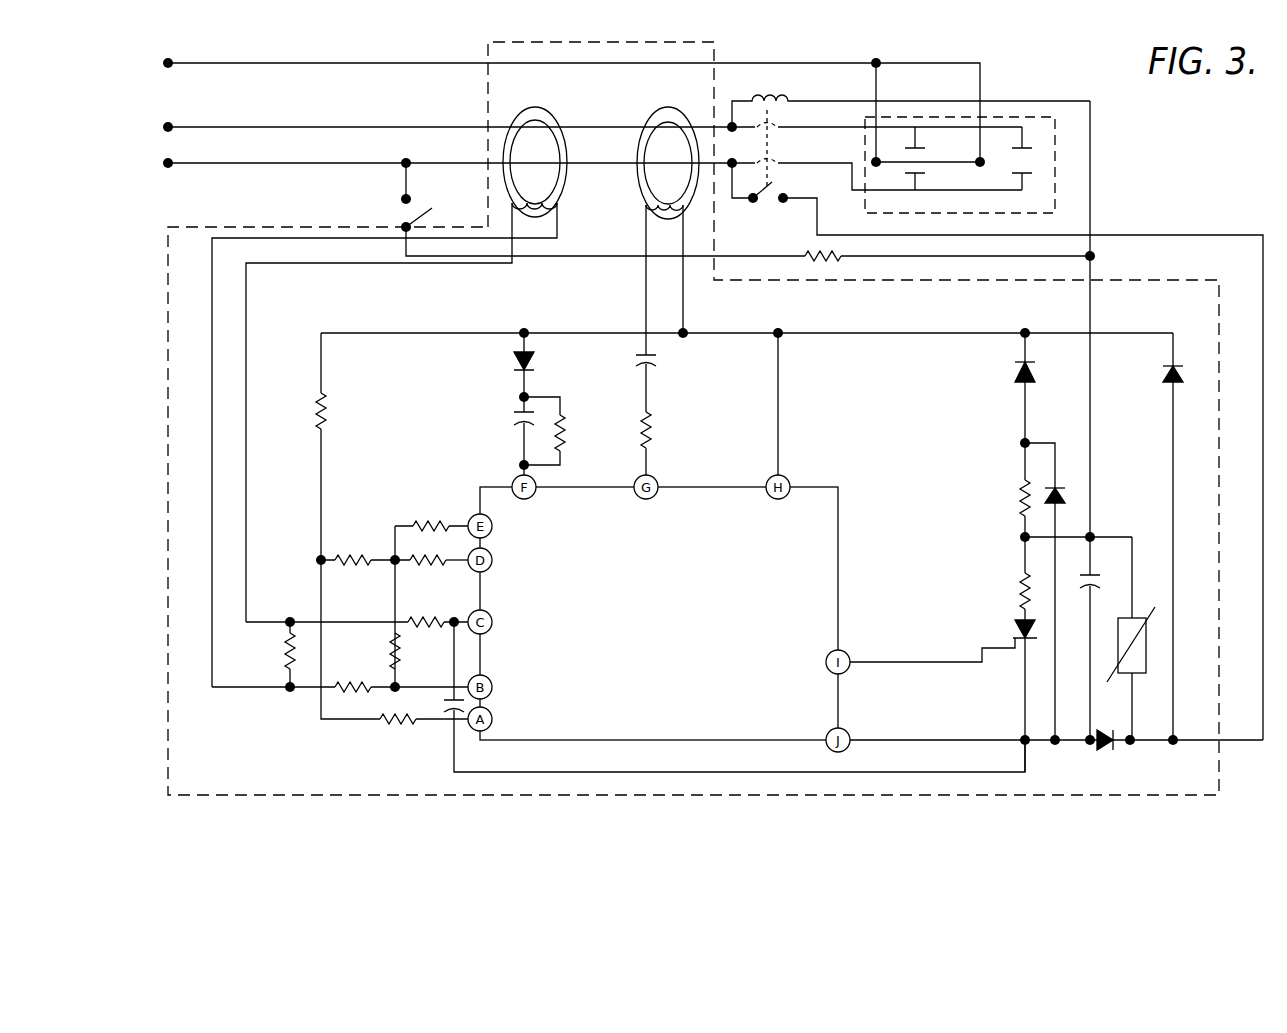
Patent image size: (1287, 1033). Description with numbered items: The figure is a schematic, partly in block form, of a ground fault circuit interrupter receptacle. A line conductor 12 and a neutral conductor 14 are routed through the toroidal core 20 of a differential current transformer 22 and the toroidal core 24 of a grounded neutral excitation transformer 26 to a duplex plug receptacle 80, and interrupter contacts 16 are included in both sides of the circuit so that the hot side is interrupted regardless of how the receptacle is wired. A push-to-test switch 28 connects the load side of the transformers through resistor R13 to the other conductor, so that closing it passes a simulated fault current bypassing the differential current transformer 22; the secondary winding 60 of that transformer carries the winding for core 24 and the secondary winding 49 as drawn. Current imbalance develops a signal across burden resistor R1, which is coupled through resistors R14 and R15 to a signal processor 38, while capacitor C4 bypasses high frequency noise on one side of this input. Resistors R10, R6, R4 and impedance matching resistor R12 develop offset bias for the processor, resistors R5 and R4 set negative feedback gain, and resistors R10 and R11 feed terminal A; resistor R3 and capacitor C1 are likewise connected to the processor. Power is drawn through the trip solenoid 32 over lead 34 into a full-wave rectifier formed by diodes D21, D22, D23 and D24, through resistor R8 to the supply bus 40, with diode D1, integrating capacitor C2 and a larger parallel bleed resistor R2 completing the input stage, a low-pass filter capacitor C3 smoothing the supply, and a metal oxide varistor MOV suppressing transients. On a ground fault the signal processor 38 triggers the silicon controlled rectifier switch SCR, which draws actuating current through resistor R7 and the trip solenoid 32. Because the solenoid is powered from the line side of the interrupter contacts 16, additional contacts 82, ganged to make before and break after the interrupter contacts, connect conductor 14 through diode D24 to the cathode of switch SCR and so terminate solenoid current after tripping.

The line conductor 12 is at (349, 127).
The neutral conductor 14 is at (337, 165).
The interrupter contacts 16 is at (778, 140).
The toroidal core 20 is at (552, 114).
The differential current transformer 22 is at (560, 180).
The toroidal core 24 is at (668, 112).
The grounded neutral excitation transformer 26 is at (637, 170).
The push-to-test switch 28 is at (428, 215).
The trip solenoid 32 is at (790, 96).
The lead 34 is at (1090, 430).
The signal processor 38 is at (658, 684).
The bus 40 is at (872, 335).
The secondary winding 49 is at (664, 280).
The secondary winding 60 is at (384, 445).
The duplex plug receptacle 80 is at (1058, 158).
The contacts 82 is at (997, 451).
The burden resistor R1 is at (280, 650).
The resistor R2 is at (565, 428).
The resistor R3 is at (647, 435).
The resistor R4 is at (397, 650).
The resistor R5 is at (435, 524).
The resistor R6 is at (358, 557).
The resistor R7 is at (1018, 587).
The resistor R8 is at (1021, 498).
The resistor R10 is at (328, 410).
The resistor R11 is at (405, 730).
The impedance matching resistor R12 is at (434, 557).
The resistor R13 is at (837, 258).
The resistor R14 is at (436, 619).
The resistor R15 is at (364, 684).
The capacitor C1 is at (658, 361).
The integrating capacitor C2 is at (514, 420).
The low-pass filter capacitor C3 is at (1100, 578).
The capacitor C4 is at (444, 707).
The diode D1 is at (533, 365).
The diode D21 is at (1035, 379).
The diode D22 is at (1178, 380).
The diode D23 is at (1064, 507).
The diode D24 is at (1092, 753).
The silicon controlled rectifier switch SCR is at (1014, 629).
The metal oxide varistor MOV is at (1162, 687).